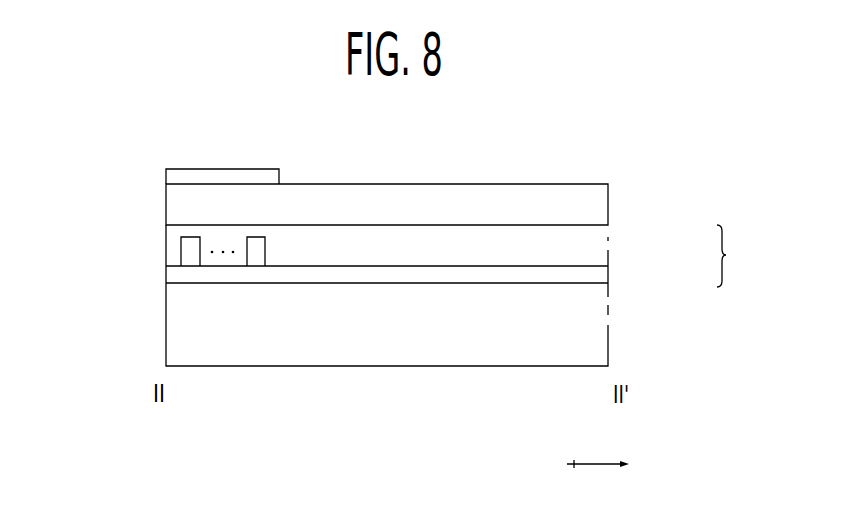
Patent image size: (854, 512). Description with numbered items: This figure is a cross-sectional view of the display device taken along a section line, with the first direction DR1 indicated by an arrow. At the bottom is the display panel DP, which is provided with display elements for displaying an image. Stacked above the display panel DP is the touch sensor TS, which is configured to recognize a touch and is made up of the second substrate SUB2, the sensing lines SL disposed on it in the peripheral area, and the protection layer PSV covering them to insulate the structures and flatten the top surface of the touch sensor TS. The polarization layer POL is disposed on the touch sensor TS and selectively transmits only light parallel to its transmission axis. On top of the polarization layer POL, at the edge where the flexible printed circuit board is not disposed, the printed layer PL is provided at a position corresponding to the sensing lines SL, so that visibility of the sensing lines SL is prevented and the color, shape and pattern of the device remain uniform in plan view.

The printed layer PL is at (175, 177).
The sensing lines SL is at (195, 249).
The polarization layer POL is at (609, 202).
The protection layer PSV is at (609, 238).
The second substrate SUB2 is at (609, 275).
The touch sensor TS is at (733, 256).
The display panel DP is at (609, 337).
The first direction DR1 is at (617, 465).